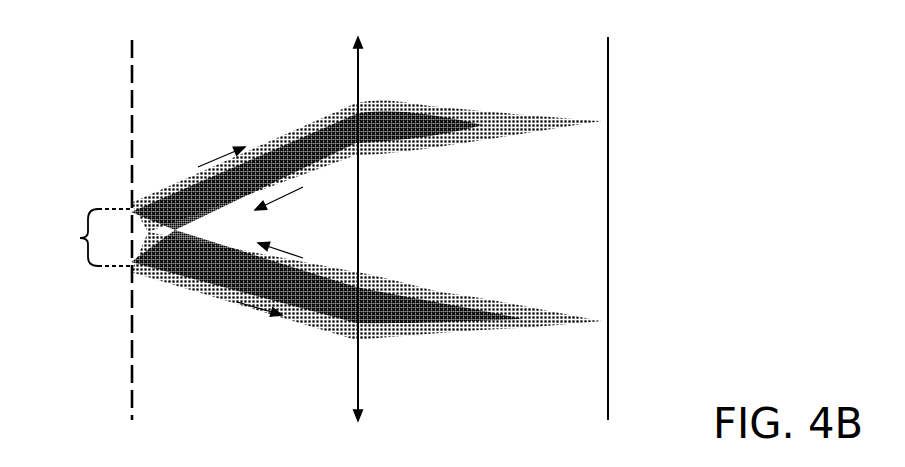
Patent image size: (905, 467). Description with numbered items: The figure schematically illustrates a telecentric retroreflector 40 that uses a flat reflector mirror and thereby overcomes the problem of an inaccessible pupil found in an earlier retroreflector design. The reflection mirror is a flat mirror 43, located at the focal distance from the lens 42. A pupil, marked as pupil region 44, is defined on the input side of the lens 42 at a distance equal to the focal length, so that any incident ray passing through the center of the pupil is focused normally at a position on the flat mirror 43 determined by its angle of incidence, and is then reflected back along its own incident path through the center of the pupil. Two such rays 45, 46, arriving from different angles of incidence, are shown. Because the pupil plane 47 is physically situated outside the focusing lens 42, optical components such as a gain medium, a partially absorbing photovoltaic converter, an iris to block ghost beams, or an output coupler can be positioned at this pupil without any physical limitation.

The telecentric retroreflector 40 is at (537, 68).
The lens 42 is at (359, 396).
The flat mirror 43 is at (607, 386).
The pupil region 44 is at (80, 238).
The ray 45 is at (285, 137).
The ray 46 is at (203, 291).
The pupil plane 47 is at (131, 419).